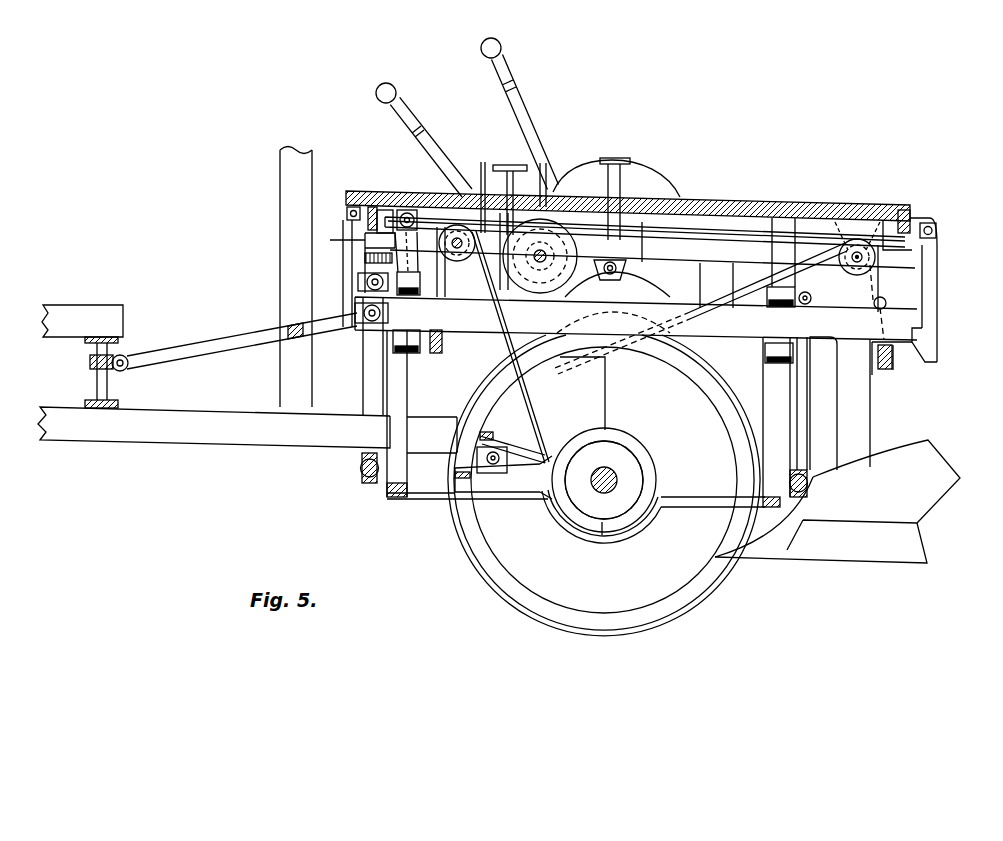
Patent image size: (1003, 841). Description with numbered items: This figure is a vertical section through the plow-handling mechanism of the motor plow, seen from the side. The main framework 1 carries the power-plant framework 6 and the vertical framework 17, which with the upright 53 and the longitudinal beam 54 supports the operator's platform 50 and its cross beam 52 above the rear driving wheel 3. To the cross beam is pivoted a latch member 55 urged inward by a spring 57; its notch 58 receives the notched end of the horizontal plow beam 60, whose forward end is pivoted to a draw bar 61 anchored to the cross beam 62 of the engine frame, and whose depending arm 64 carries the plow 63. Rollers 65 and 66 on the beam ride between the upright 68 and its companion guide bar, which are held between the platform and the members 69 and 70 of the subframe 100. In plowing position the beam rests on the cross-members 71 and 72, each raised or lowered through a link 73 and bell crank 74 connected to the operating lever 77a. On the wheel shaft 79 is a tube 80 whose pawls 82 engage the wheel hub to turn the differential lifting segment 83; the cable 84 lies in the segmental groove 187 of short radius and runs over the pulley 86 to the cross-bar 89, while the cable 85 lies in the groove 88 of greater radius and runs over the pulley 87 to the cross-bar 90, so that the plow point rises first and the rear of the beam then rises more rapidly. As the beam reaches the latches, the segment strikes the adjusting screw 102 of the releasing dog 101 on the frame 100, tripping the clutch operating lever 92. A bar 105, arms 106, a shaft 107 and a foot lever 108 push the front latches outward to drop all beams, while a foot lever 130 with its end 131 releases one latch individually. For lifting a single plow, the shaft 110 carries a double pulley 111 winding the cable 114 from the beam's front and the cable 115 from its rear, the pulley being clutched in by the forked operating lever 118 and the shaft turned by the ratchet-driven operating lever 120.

The framework 1 is at (214, 427).
The wheel 3 is at (623, 620).
The framework 6 is at (82, 321).
The vertical framework 17 is at (365, 258).
The operator's platform 50 is at (835, 199).
The steel beam 52 is at (373, 205).
The upright 53 is at (716, 285).
The longitudinal beam 54 is at (650, 242).
The latch member 55 is at (352, 236).
The spring 57 is at (938, 249).
The notch 58 is at (362, 322).
The plow beam 60 is at (636, 318).
The draw bar 61 is at (243, 343).
The cross beam 62 is at (97, 385).
The plow 63 is at (837, 501).
The depending arm 64 is at (858, 405).
The roller 65 is at (400, 290).
The roller 66 is at (410, 354).
The upright 68 is at (407, 402).
The member of the subframe 69 is at (392, 499).
The member of the subframe 70 is at (770, 508).
The cross-member 71 is at (360, 486).
The cross-member 72 is at (807, 470).
The link 73 is at (367, 398).
The bell crank 74 is at (365, 284).
The operating lever 77a is at (534, 121).
The shaft 79 is at (617, 465).
The tube 80 is at (618, 477).
The pawl 82 is at (612, 440).
The differential lifting segment 83 is at (603, 478).
The cable 84 is at (499, 336).
The cable 85 is at (752, 283).
The pulley 86 is at (460, 262).
The pulley 87 is at (857, 276).
The segmental groove 88 is at (582, 393).
The cross-bar 89 is at (442, 345).
The cross-bar 90 is at (890, 368).
The clutch operating lever 92 is at (545, 501).
The frame 100 is at (688, 500).
The releasing dog 101 is at (507, 478).
The adjusting screw 102 is at (478, 440).
The bar 105 is at (370, 247).
The arm 106 is at (400, 206).
The shaft 107 is at (407, 210).
The foot lever 108 is at (618, 176).
The shaft 110 is at (537, 263).
The double pulley 111 is at (577, 257).
The cable 114 is at (453, 158).
The cable 115 is at (712, 228).
The operating lever 118 is at (550, 178).
The operating lever 120 is at (421, 131).
The foot lever 130 is at (506, 167).
The end 131 is at (345, 206).
The segmental groove 187 is at (540, 457).